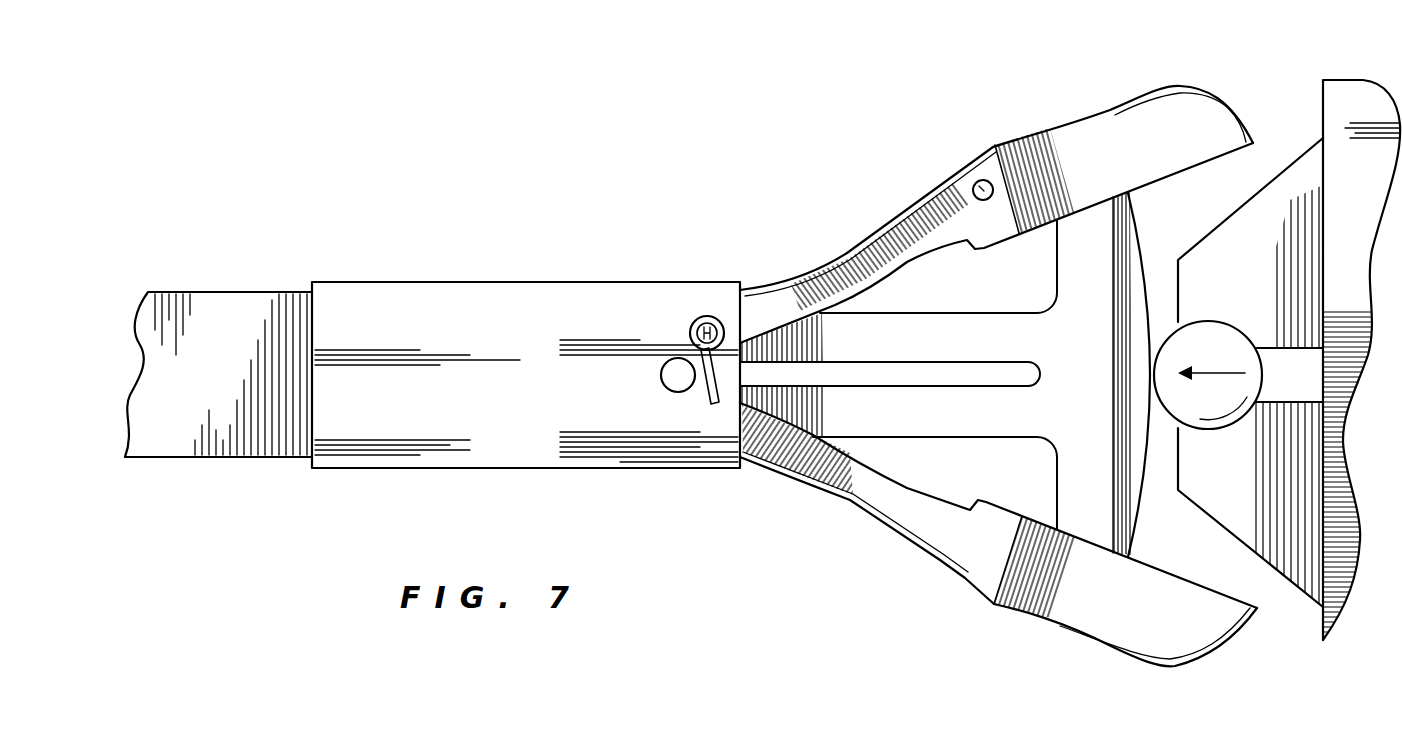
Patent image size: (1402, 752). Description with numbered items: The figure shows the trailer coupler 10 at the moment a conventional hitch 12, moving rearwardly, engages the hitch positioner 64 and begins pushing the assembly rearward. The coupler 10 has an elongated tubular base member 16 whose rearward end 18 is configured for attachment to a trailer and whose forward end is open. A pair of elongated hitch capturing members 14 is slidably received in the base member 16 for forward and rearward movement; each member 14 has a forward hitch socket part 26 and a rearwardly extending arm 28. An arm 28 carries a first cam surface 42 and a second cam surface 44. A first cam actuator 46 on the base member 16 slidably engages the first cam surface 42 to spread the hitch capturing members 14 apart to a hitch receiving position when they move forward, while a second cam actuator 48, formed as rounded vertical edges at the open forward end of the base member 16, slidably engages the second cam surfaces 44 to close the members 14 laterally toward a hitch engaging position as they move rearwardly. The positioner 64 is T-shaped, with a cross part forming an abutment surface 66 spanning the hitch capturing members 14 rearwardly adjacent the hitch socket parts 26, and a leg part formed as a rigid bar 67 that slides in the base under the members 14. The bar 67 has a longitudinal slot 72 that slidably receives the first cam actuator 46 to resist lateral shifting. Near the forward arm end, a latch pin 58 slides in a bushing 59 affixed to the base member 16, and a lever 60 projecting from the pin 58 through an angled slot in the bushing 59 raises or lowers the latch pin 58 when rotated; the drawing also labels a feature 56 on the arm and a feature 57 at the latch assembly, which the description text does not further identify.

The coupler 10 is at (735, 118).
The hitch 12 is at (1198, 340).
The hitch capturing members 14 is at (1112, 107).
The tubular base member 16 is at (472, 278).
The rearward end 18 is at (310, 424).
The hitch socket part 26 is at (1213, 128).
The arm 28 is at (845, 253).
The first cam surface 42 is at (895, 263).
The second cam surface 44 is at (905, 215).
The first cam actuator 46 is at (672, 382).
The second cam actuator 48 is at (758, 290).
The hole 56 is at (983, 180).
The pivot pin 57 is at (704, 315).
The latch pin 58 is at (693, 340).
The bushing 59 is at (695, 330).
The lever 60 is at (705, 390).
The hitch positioner 64 is at (1150, 512).
The abutment surface 66 is at (1137, 222).
The rigid bar 67 is at (1004, 312).
The longitudinal slot 72 is at (903, 375).